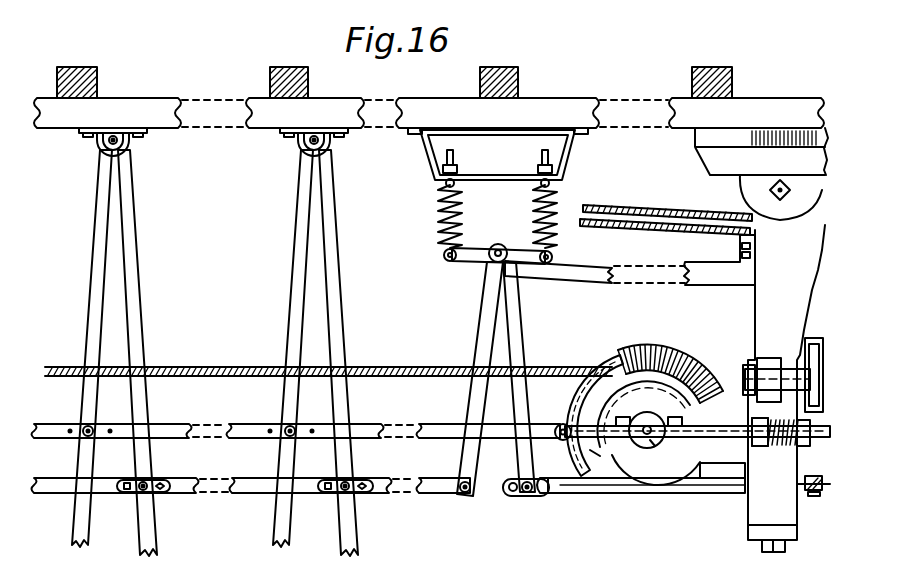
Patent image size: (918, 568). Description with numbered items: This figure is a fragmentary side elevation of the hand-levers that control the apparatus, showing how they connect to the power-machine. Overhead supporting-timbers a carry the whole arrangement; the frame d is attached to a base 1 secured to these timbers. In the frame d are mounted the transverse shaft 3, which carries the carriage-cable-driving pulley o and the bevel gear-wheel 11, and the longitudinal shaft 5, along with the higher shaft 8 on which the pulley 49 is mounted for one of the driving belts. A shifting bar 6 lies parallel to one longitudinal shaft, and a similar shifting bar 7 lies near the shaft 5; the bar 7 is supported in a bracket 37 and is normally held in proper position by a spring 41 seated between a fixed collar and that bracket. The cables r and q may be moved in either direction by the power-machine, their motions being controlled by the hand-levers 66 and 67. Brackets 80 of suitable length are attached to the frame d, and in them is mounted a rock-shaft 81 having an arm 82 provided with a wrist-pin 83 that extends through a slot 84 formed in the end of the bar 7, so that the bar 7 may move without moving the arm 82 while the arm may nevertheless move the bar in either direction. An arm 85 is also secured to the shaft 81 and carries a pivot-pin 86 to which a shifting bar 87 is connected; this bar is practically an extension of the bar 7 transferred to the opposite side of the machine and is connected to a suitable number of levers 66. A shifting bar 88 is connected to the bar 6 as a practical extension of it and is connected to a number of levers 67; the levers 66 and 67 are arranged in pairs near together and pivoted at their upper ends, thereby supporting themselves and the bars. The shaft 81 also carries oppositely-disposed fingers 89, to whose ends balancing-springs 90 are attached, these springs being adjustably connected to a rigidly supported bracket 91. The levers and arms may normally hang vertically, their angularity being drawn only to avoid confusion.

The supporting-timbers a is at (62, 122).
The base 1 is at (700, 161).
The cable q is at (609, 205).
The bracket 91 is at (497, 175).
The balancing-springs 90 is at (441, 216).
The fingers 89 is at (498, 237).
The rock-shaft 81 is at (490, 262).
The brackets 80 is at (590, 279).
The frame d is at (766, 318).
The pulley 49 is at (815, 340).
The bevel gear-wheel 11 is at (653, 350).
The shaft 8 is at (780, 372).
The cable r is at (400, 367).
The hand-levers 67 is at (219, 342).
The shifting bar 88 is at (164, 424).
The carriage-cable-driving pulley o is at (588, 411).
The shaft 3 is at (650, 426).
The shifting bar 6 is at (588, 446).
The bracket 37 is at (755, 445).
The arm 85 is at (470, 456).
The arm 82 is at (521, 458).
The pivot-pin 86 is at (463, 495).
The slot 84 is at (511, 498).
The wrist-pin 83 is at (531, 495).
The shifting bar 7 is at (645, 494).
The shaft 5 is at (812, 476).
The spring 41 is at (780, 448).
The hand-levers 66 is at (150, 505).
The shifting bar 87 is at (246, 494).